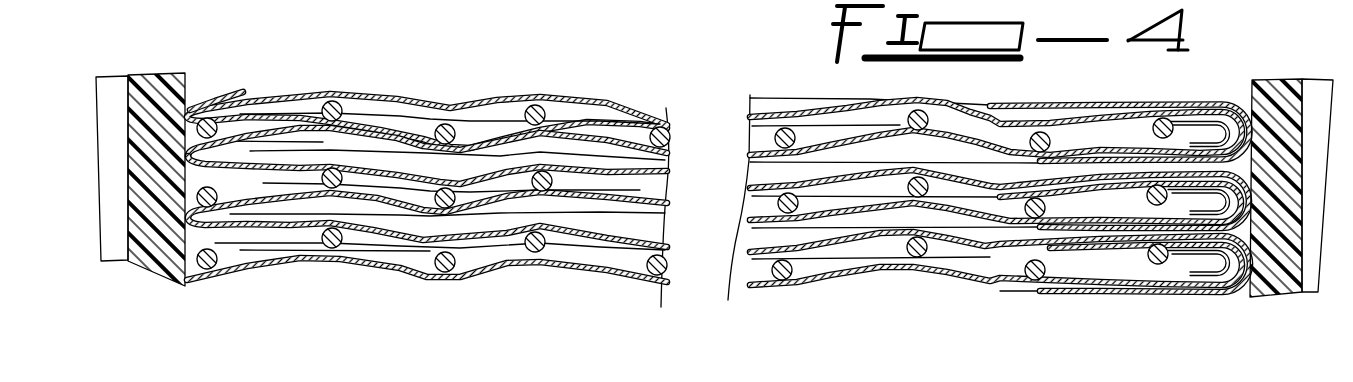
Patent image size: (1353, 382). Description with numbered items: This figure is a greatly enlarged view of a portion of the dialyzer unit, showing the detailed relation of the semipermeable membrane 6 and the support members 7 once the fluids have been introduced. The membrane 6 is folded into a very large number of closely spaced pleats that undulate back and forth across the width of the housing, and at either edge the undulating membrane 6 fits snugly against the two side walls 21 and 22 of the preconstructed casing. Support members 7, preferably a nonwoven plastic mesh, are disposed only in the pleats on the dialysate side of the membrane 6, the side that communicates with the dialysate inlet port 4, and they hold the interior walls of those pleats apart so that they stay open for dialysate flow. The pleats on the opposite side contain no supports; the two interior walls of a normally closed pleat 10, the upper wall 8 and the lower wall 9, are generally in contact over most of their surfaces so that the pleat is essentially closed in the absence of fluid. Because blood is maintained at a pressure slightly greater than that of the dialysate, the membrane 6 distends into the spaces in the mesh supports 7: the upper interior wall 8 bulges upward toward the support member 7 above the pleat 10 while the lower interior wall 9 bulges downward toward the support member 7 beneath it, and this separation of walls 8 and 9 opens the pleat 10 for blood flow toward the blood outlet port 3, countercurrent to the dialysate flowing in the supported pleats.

The blood outlet port 3 is at (1312, 97).
The dialysate inlet port 4 is at (115, 124).
The semipermeable membrane 6 is at (1001, 200).
The support members 7 is at (338, 167).
The upper wall 8 is at (750, 147).
The lower wall 9 is at (750, 177).
The normally closed pleat 10 is at (185, 176).
The side wall 21 is at (157, 98).
The side wall 22 is at (1277, 80).